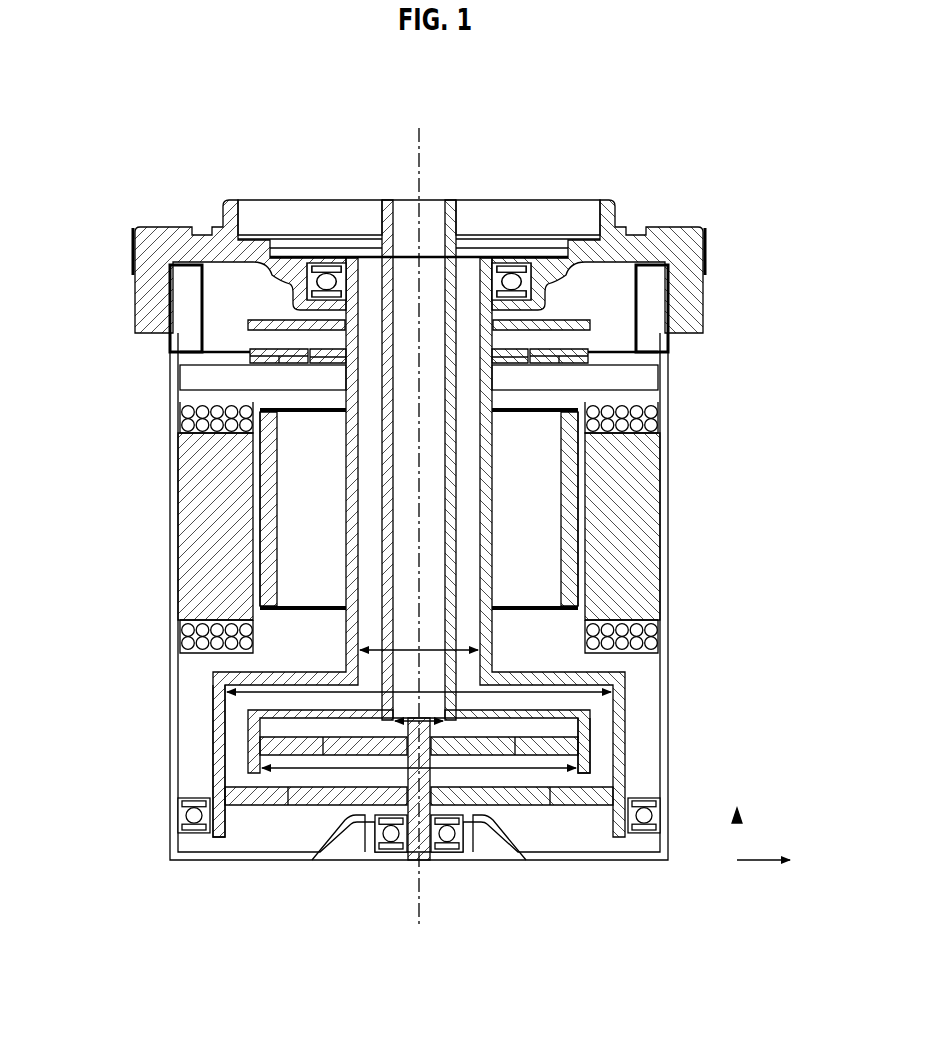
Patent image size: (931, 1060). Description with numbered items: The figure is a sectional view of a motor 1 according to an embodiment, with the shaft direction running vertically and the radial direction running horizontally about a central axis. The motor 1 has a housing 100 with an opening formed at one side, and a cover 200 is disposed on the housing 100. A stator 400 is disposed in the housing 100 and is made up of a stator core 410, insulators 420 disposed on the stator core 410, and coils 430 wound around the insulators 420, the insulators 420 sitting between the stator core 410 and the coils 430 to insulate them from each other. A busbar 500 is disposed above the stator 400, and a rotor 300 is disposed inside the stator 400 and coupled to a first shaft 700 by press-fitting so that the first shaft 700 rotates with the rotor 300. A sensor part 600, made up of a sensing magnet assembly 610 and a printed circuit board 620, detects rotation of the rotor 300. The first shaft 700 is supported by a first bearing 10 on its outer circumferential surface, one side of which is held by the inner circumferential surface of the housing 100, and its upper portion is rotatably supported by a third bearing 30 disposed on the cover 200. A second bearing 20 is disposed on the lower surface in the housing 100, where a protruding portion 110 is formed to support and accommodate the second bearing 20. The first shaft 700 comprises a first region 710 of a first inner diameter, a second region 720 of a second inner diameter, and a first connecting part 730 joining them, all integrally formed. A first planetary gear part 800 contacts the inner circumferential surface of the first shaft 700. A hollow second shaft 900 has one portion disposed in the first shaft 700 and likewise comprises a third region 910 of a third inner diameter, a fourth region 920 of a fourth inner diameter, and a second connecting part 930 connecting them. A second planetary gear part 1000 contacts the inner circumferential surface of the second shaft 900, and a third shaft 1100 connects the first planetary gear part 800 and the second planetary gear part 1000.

The motor 1 is at (90, 104).
The first bearing 10 is at (180, 813).
The second bearing 20 is at (378, 851).
The third bearing 30 is at (307, 282).
The housing 100 is at (419, 627).
The protruding portion 110 is at (317, 830).
The cover 200 is at (693, 248).
The rotor 300 is at (307, 508).
The stator 400 is at (491, 527).
The stator core 410 is at (648, 486).
The insulator 420 is at (658, 428).
The coil 430 is at (640, 410).
The busbar 500 is at (188, 376).
The sensor part 600 is at (496, 321).
The sensing magnet assembly 610 is at (596, 345).
The printed circuit board 620 is at (600, 317).
The first shaft 700 is at (337, 547).
The first region 710 is at (346, 650).
The second region 720 is at (213, 737).
The first connecting part 730 is at (228, 664).
The first planetary gear part 800 is at (587, 810).
The second shaft 900 is at (526, 712).
The third region 910 is at (462, 666).
The fourth region 920 is at (592, 728).
The second connecting part 930 is at (578, 704).
The second planetary gear part 1000 is at (535, 760).
The third shaft 1100 is at (438, 849).